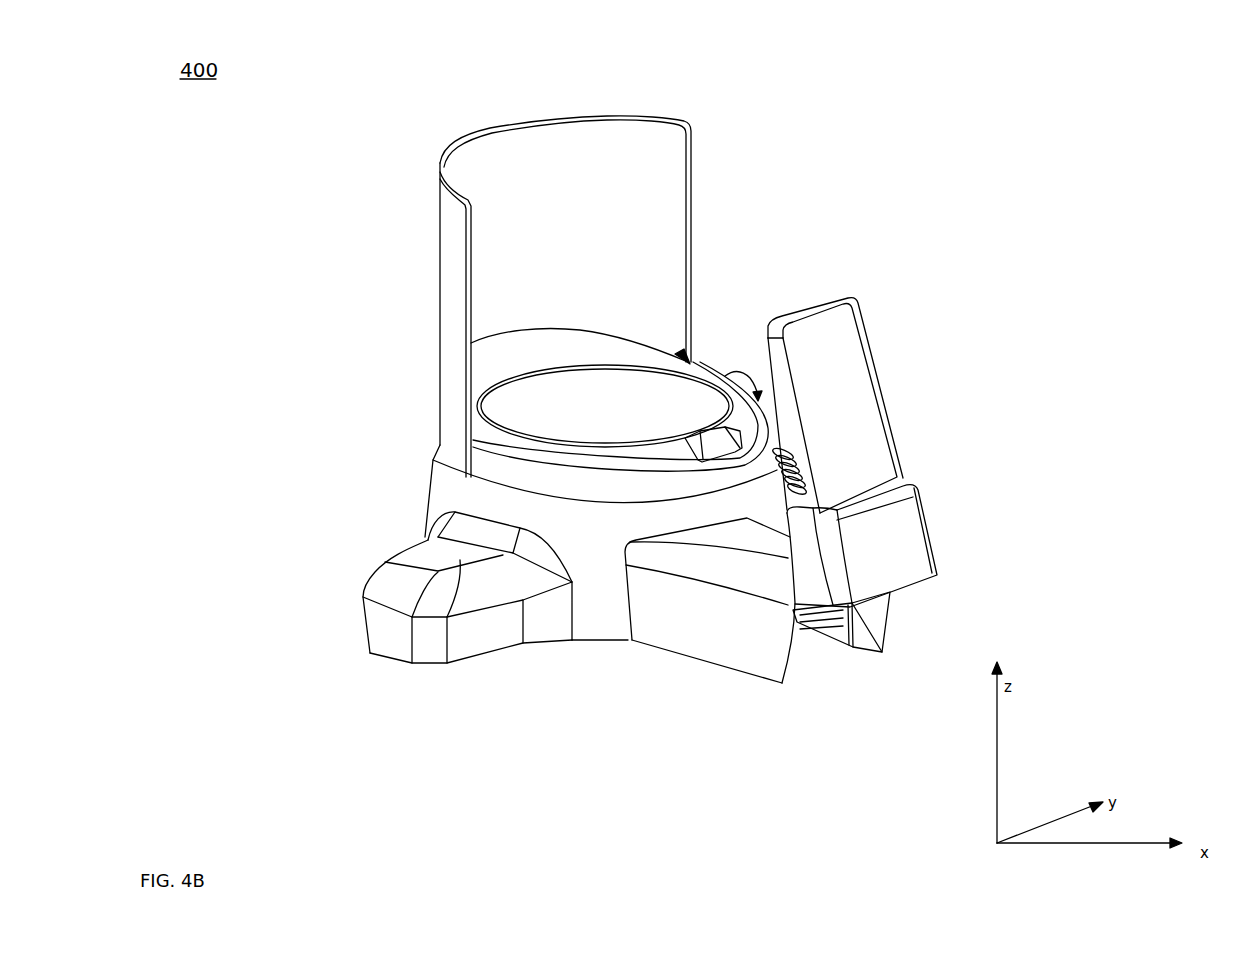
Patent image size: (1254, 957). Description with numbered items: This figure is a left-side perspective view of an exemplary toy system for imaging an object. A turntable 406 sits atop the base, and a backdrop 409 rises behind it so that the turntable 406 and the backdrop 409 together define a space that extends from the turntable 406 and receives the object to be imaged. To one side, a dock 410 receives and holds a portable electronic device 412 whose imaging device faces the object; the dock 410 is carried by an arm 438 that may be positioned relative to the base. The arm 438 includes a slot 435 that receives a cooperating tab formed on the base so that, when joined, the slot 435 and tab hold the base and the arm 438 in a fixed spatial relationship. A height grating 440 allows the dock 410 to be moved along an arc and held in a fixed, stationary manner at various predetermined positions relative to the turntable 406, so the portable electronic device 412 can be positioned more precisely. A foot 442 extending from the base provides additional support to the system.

The turntable 406 is at (637, 420).
The backdrop 409 is at (607, 117).
The dock 410 is at (877, 542).
The arm panel 412 is at (847, 428).
The slot 435 is at (738, 550).
The arm 438 is at (728, 668).
The height grating 440 is at (853, 623).
The foot 442 is at (403, 585).